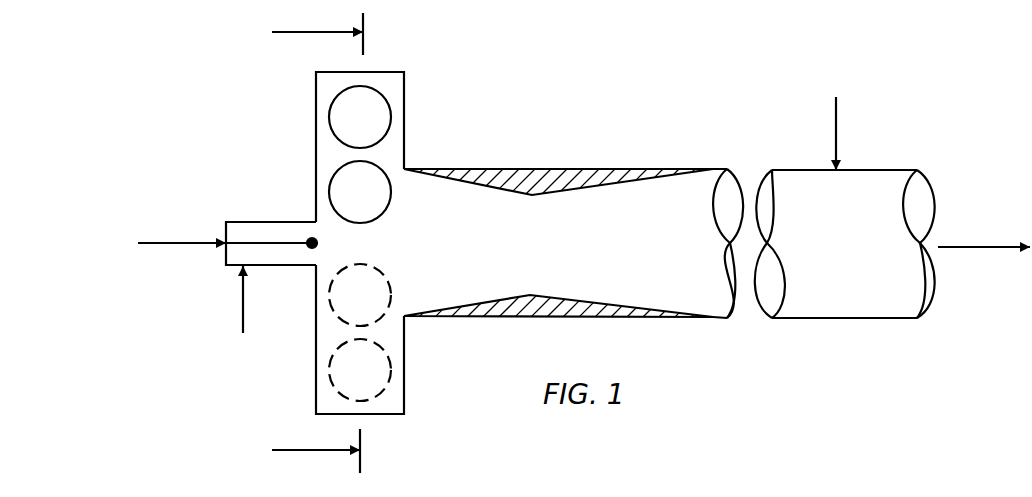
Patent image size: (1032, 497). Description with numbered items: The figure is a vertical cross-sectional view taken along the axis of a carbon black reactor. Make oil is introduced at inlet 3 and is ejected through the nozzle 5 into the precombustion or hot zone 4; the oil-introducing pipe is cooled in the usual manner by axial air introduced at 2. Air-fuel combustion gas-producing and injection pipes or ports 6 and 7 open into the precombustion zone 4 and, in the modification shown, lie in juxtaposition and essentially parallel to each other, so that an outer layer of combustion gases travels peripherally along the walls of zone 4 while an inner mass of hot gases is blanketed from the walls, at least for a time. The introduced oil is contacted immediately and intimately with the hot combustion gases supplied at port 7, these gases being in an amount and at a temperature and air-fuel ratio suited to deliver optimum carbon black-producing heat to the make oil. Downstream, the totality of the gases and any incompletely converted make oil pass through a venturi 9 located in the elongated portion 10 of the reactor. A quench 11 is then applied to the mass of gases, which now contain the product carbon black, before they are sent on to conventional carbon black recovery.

The axial air inlet 2 is at (212, 335).
The make oil inlet 3 is at (160, 244).
The precombustion zone 4 is at (390, 148).
The nozzle 5 is at (316, 246).
The combustion gas injection port 6 is at (340, 99).
The combustion gas injection port 7 is at (342, 172).
The venturi 9 is at (538, 181).
The elongated portion 10 is at (665, 198).
The quench 11 is at (837, 127).